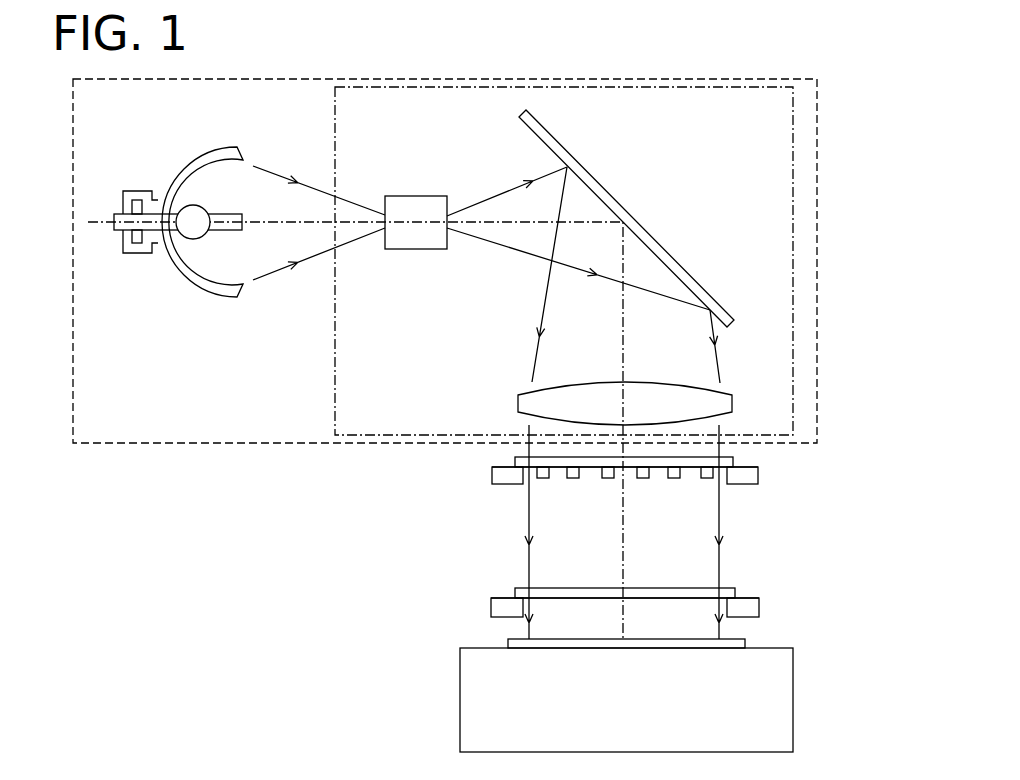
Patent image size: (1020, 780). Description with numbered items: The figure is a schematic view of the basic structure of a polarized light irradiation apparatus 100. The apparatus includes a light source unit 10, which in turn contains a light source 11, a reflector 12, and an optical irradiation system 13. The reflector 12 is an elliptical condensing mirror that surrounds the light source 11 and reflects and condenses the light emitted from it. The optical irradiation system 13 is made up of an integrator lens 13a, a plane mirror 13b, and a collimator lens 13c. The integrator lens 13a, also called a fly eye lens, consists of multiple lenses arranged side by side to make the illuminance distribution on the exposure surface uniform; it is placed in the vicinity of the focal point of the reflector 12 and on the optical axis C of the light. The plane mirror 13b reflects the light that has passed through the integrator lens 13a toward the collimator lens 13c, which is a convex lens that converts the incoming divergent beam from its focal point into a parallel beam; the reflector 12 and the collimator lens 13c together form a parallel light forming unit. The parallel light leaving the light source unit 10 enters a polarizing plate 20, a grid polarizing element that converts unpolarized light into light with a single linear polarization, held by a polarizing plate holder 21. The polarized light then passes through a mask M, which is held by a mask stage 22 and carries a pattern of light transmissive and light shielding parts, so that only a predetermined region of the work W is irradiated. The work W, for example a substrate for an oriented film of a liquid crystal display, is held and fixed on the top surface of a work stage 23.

The polarized light irradiation apparatus 100 is at (288, 504).
The light source unit 10 is at (817, 123).
The light source 11 is at (193, 205).
The reflector 12 is at (182, 272).
The optical irradiation system 13 is at (793, 203).
The integrator lens 13a is at (418, 196).
The plane mirror 13b is at (667, 253).
The collimator lens 13c is at (548, 388).
The polarizing plate 20 is at (614, 475).
The polarizing plate holder 21 is at (492, 477).
The mask stage 22 is at (491, 607).
The work stage 23 is at (460, 698).
The optical axis C is at (88, 222).
The mask M is at (735, 588).
The work W is at (745, 639).